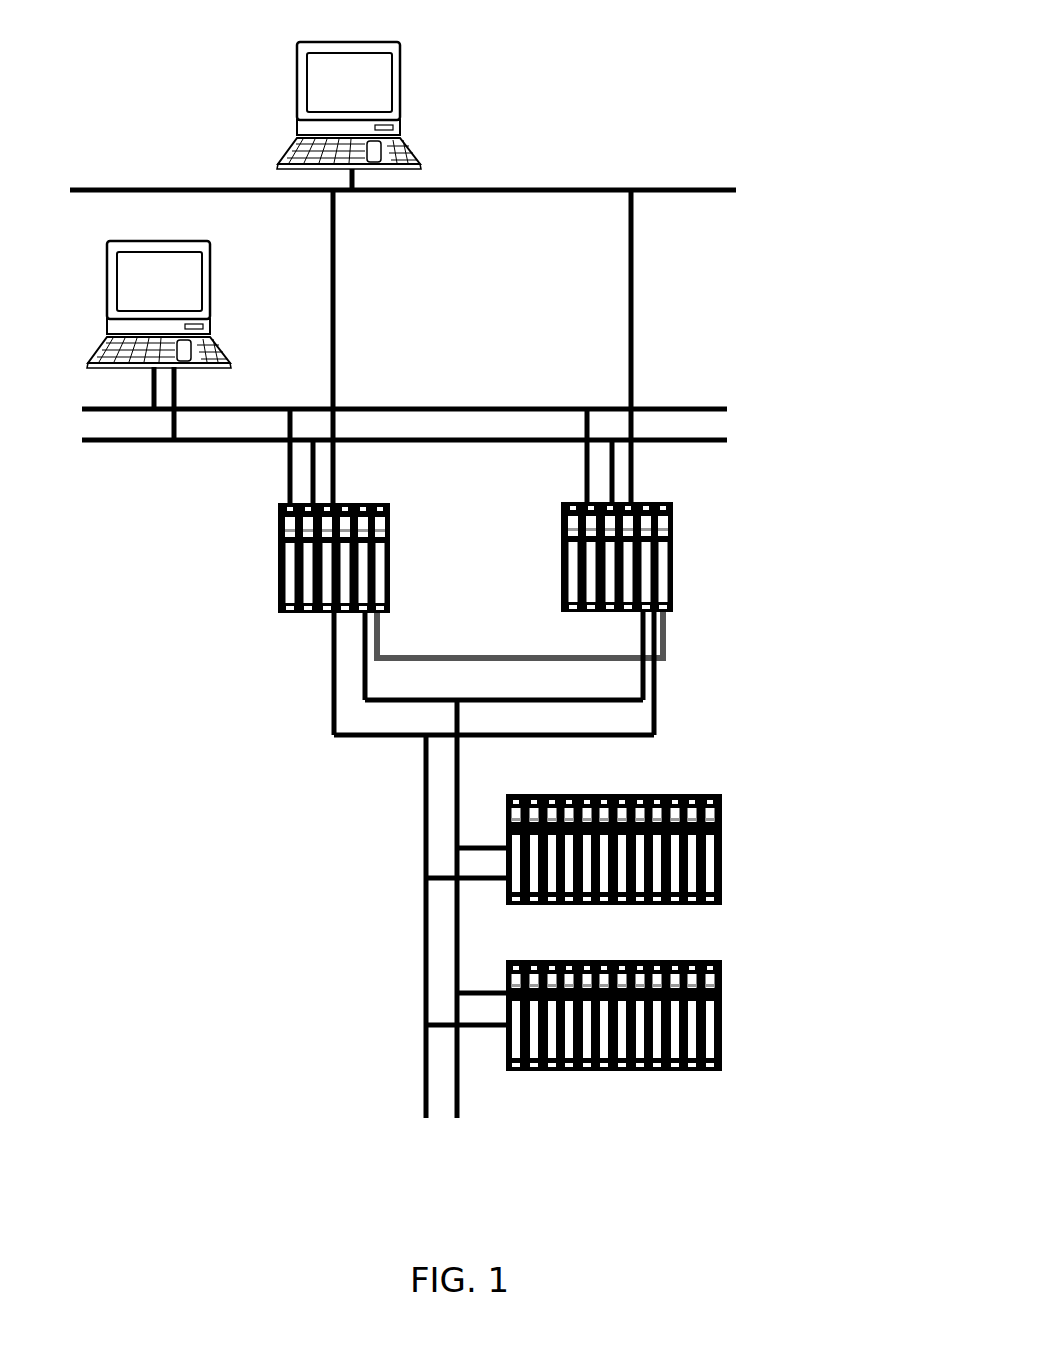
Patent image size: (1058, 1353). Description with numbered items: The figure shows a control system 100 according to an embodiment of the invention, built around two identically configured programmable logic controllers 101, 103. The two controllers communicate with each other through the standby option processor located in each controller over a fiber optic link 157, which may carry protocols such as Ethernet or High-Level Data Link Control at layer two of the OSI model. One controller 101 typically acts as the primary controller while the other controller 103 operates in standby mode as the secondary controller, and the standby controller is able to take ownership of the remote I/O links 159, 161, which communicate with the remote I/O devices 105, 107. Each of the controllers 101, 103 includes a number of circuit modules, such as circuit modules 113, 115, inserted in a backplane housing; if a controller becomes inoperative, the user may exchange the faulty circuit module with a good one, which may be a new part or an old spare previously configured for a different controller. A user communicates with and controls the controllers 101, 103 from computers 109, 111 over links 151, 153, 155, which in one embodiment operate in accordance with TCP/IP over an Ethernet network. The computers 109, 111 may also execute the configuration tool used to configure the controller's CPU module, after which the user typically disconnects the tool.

The control system 100 is at (781, 44).
The programmable logic controller 101 is at (256, 550).
The programmable logic controller 103 is at (683, 605).
The remote I/O device 105 is at (725, 846).
The remote I/O device 107 is at (725, 1012).
The computer 109 is at (404, 104).
The computer 111 is at (215, 296).
The circuit module 113 is at (290, 614).
The circuit module 115 is at (312, 614).
The link 151 is at (531, 187).
The link 153 is at (455, 406).
The link 155 is at (148, 452).
The fiber optic link 157 is at (418, 656).
The remote I/O link 159 is at (425, 998).
The remote I/O link 161 is at (459, 1082).